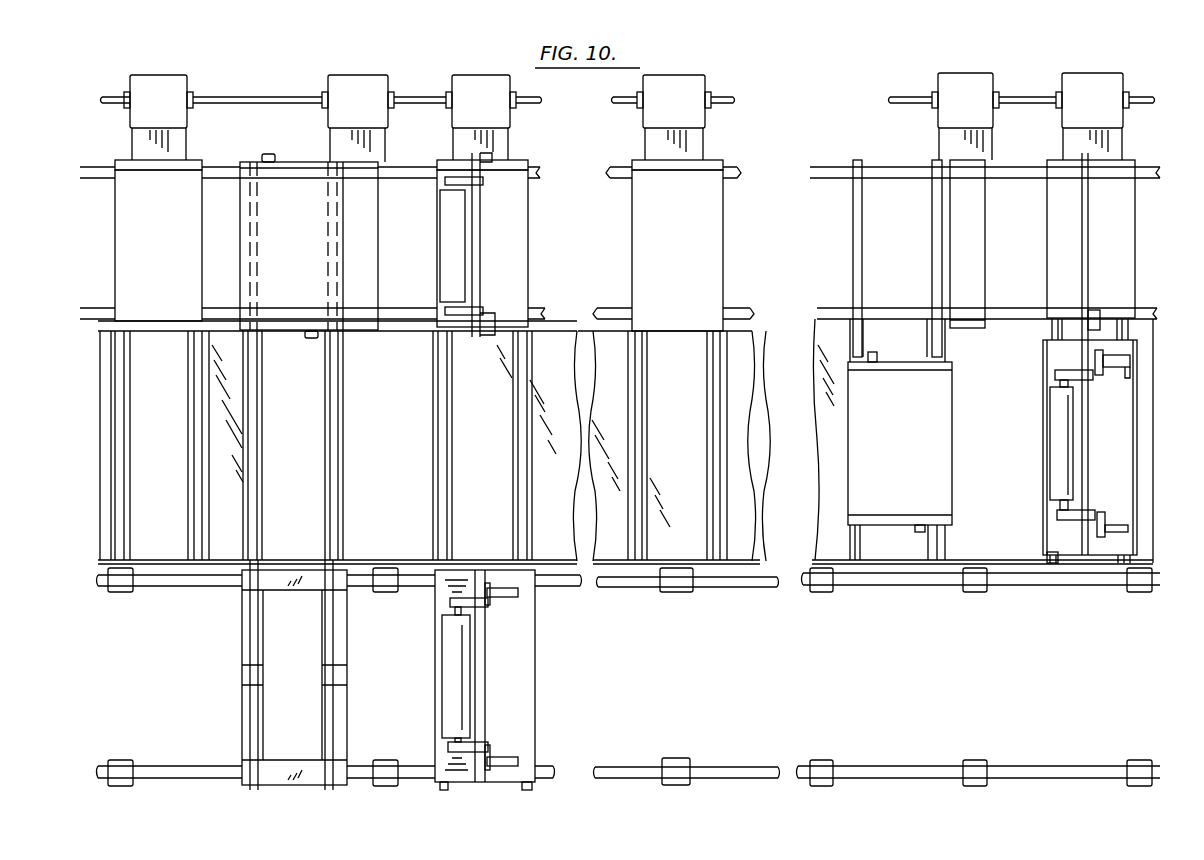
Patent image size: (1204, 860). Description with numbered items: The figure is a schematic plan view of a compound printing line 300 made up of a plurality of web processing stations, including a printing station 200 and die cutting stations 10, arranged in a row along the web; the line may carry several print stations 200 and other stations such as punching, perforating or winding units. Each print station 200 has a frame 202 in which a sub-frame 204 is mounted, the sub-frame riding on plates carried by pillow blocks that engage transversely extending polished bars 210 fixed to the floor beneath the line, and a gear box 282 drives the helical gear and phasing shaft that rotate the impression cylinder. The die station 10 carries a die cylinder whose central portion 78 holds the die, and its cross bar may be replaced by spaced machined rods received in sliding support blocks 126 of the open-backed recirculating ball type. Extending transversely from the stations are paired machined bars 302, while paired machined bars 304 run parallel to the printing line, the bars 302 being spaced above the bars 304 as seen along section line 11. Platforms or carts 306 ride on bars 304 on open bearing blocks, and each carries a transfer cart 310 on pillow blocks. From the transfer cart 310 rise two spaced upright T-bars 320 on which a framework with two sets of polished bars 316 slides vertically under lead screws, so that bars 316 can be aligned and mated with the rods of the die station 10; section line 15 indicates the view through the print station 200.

The die station 10 is at (530, 268).
The section line 11 is at (425, 790).
The section line 15 is at (237, 137).
The central portion of the die cylinder 78 is at (447, 648).
The sliding support blocks 126 is at (1065, 520).
The print station 200 is at (367, 338).
The frame 202 is at (383, 262).
The sub-frame 204 is at (292, 312).
The polished bars 210 is at (932, 268).
The gear box 282 is at (365, 80).
The compound printing line 300 is at (786, 98).
The paired machined bars 302 is at (197, 476).
The paired machined bars 304 is at (805, 580).
The carts 306 is at (240, 645).
The transfer cart 310 is at (517, 638).
The polished bars 316 is at (478, 670).
The T-bars 320 is at (512, 603).